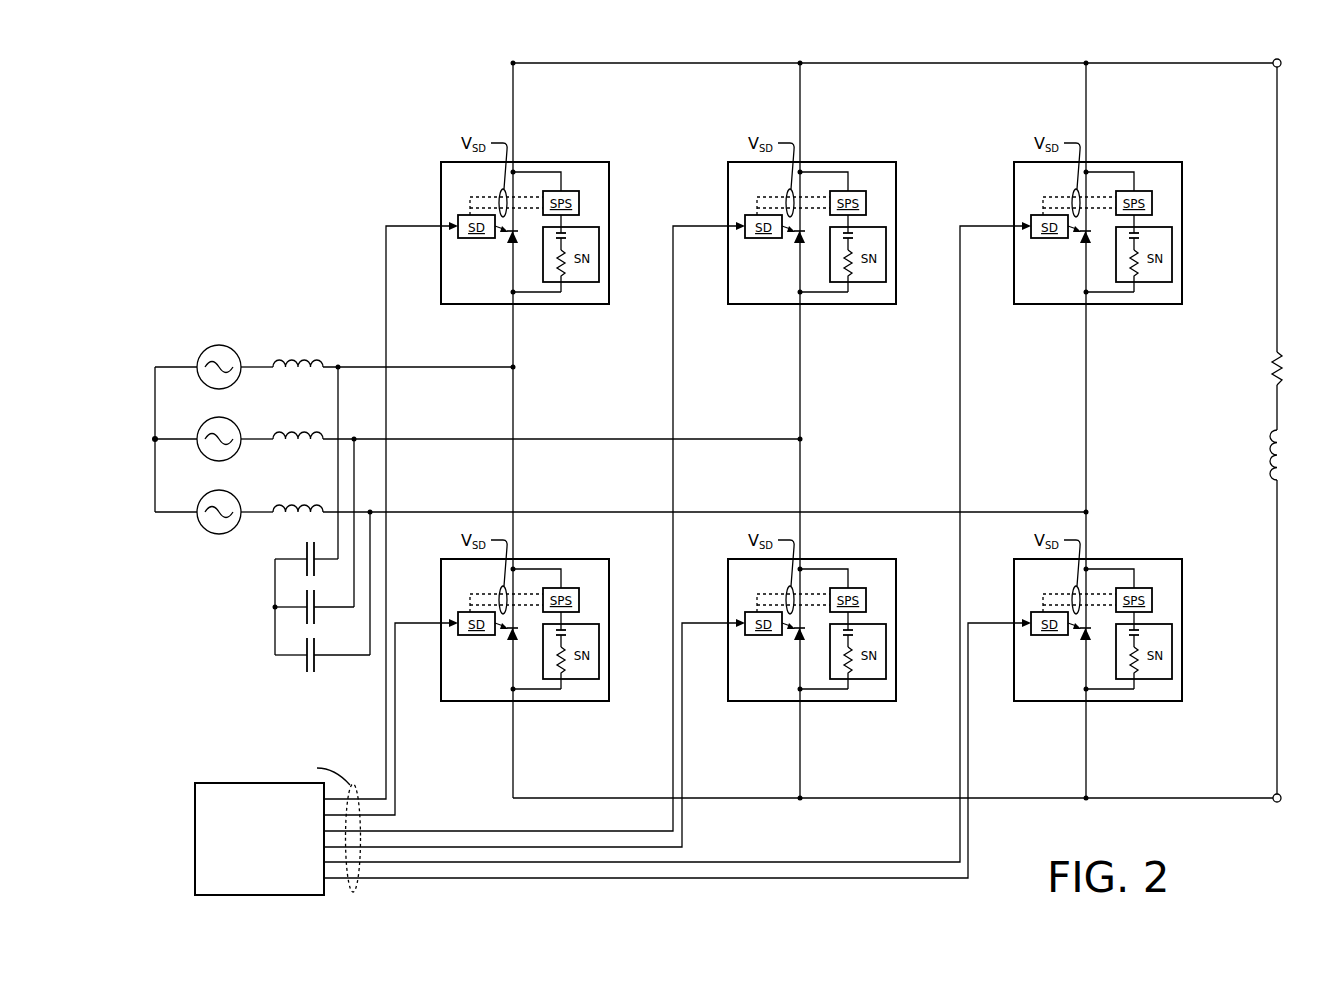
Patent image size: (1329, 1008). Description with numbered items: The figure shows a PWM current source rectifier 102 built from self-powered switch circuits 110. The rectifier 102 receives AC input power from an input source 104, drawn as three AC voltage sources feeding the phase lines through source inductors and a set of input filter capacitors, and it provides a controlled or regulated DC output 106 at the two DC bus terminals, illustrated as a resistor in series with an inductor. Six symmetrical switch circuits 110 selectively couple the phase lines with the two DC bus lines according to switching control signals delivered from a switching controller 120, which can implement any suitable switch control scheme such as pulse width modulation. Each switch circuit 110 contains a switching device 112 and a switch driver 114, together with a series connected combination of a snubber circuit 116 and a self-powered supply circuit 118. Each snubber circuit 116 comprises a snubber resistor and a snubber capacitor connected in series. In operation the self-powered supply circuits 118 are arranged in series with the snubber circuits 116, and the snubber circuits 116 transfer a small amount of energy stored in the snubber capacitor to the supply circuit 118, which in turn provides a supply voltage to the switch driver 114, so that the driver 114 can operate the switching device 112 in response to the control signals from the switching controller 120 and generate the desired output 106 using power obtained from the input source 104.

The PWM current source rectifier 102 is at (245, 123).
The input source 104 is at (203, 549).
The DC output 106 is at (1225, 817).
The switch circuit 110 is at (795, 416).
The switching device 112 is at (769, 454).
The switch driver 114 is at (759, 411).
The snubber circuit 116 is at (842, 472).
The self-powered supply circuit 118 is at (870, 391).
The switching controller 120 is at (195, 840).